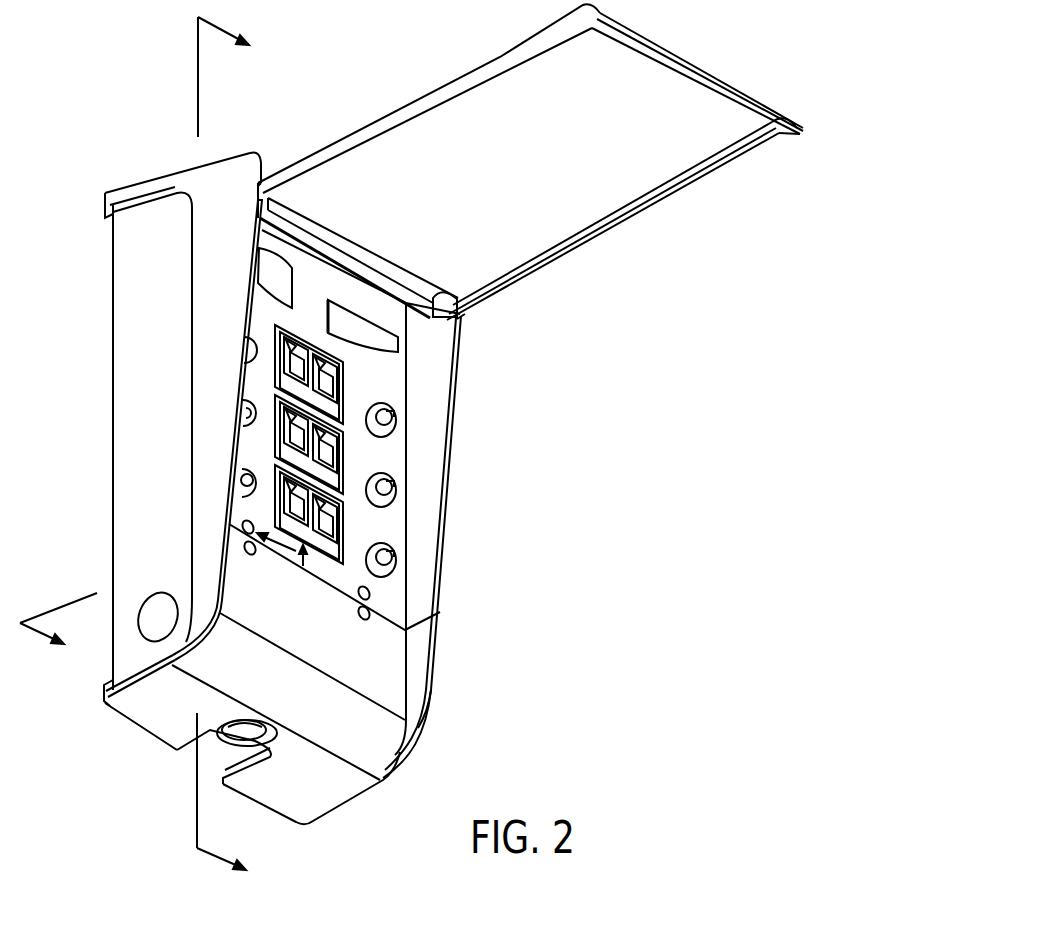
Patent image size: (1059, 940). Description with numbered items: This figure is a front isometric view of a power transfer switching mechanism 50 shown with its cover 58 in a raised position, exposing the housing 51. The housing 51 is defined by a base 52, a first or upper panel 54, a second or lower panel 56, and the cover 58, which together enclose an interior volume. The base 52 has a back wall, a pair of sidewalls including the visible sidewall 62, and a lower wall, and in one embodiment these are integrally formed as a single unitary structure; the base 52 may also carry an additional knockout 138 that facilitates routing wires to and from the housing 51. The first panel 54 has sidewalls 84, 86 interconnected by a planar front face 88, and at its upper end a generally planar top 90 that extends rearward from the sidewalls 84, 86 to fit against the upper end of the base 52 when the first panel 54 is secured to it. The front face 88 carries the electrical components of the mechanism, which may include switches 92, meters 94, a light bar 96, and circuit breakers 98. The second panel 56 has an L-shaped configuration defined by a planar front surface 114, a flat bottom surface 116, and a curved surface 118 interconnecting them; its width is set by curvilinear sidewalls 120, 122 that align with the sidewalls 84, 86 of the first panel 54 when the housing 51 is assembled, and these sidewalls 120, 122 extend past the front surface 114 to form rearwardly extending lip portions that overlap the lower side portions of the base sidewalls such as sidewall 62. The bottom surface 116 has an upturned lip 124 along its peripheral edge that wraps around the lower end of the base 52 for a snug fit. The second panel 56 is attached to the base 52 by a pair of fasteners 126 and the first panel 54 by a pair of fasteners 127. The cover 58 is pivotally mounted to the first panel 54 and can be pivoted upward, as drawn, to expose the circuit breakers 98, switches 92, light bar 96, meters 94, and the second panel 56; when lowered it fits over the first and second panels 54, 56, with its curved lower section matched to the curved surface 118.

The power transfer switching mechanism 50 is at (168, 96).
The housing 51 is at (96, 206).
The base 52 is at (128, 377).
The first panel 54 is at (209, 194).
The second panel 56 is at (387, 668).
The cover 58 is at (644, 157).
The sidewall 62 is at (127, 500).
The sidewall 84 is at (200, 303).
The sidewall 86 is at (433, 473).
The front face 88 is at (425, 593).
The top 90 is at (172, 173).
The switches 92 is at (302, 566).
The meters 94 is at (289, 285).
The light bar 96 is at (287, 253).
The circuit breakers 98 is at (242, 477).
The front surface 114 is at (388, 693).
The bottom surface 116 is at (283, 798).
The curved surface 118 is at (362, 755).
The sidewall 120 is at (202, 603).
The sidewall 122 is at (415, 705).
The upturned lip 124 is at (132, 670).
The fasteners 126 is at (253, 555).
The fasteners 127 is at (243, 528).
The knockout 138 is at (148, 625).